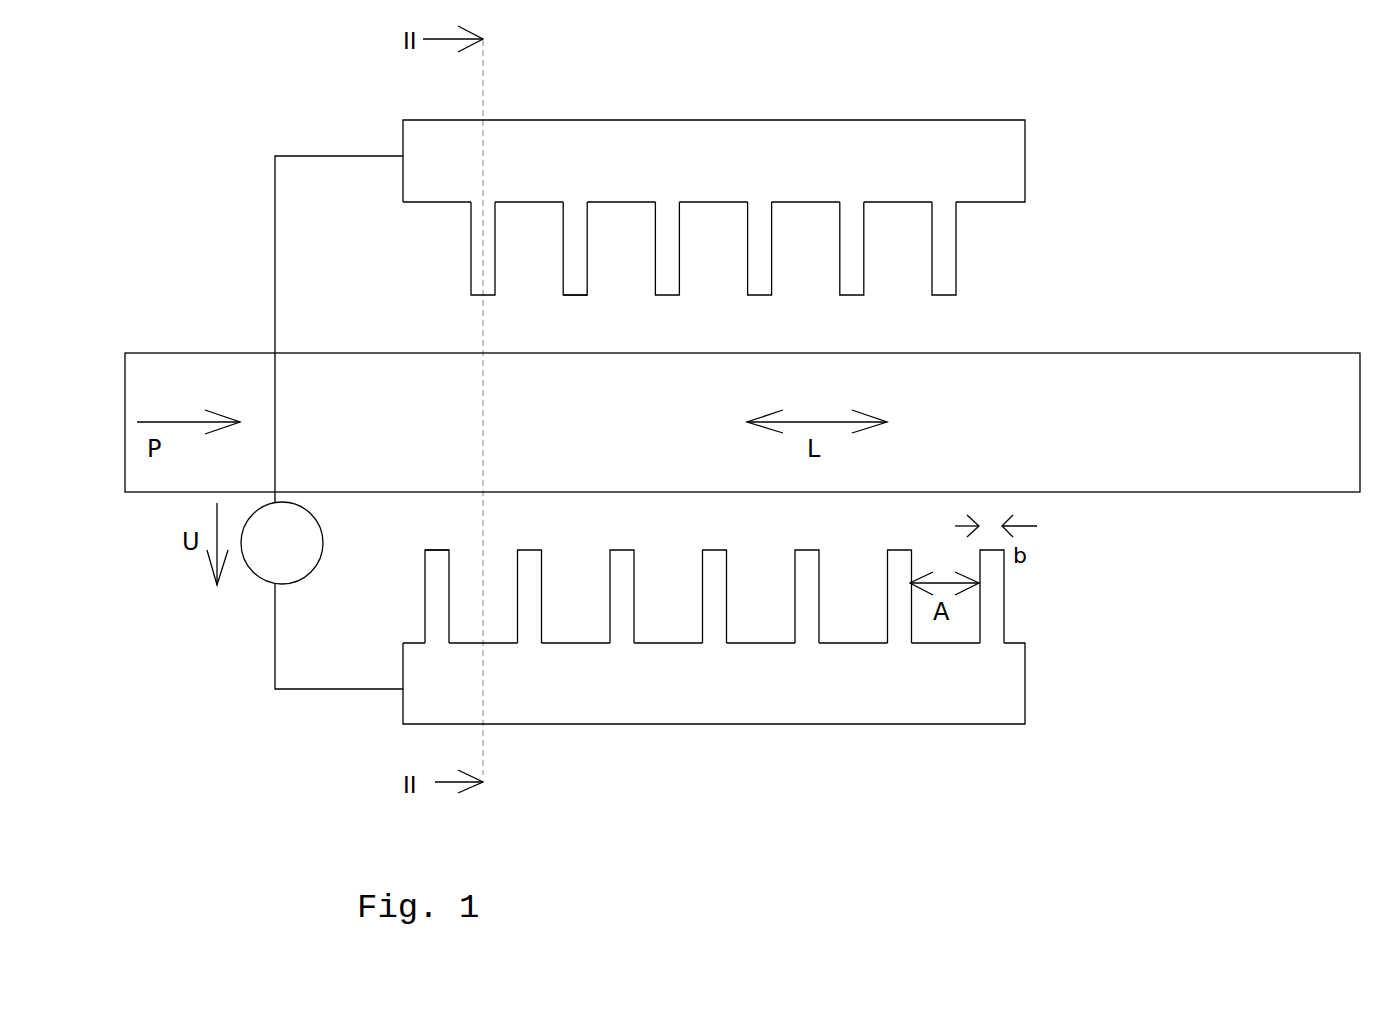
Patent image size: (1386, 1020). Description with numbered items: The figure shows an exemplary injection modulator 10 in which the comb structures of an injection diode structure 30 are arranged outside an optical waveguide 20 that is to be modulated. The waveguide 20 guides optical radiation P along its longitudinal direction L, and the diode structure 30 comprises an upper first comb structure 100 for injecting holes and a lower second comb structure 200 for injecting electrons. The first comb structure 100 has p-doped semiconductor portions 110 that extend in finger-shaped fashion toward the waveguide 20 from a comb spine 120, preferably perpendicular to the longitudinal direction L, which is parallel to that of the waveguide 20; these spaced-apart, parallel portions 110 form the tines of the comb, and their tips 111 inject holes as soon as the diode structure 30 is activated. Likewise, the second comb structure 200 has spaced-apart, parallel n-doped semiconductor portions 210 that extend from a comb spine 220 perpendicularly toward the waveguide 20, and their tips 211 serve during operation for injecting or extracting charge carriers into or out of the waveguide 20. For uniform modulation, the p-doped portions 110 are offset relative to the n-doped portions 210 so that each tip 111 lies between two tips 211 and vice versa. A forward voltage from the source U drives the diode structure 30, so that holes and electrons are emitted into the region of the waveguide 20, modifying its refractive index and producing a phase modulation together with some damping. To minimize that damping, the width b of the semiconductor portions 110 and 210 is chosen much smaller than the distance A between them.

The injection modulator 10 is at (1235, 200).
The optical waveguide 20 is at (1173, 400).
The diode structure 30 is at (1048, 260).
The first comb structure 100 is at (755, 197).
The p-doped semiconductor portions 110 is at (713, 248).
The tips of the p-doped semiconductor portions 111 is at (611, 312).
The comb spine 120 is at (1013, 155).
The second comb structure 200 is at (732, 658).
The n-doped semiconductor portions 210 is at (714, 596).
The tips of the n-doped semiconductor portions 211 is at (403, 559).
The comb spine 220 is at (1002, 688).